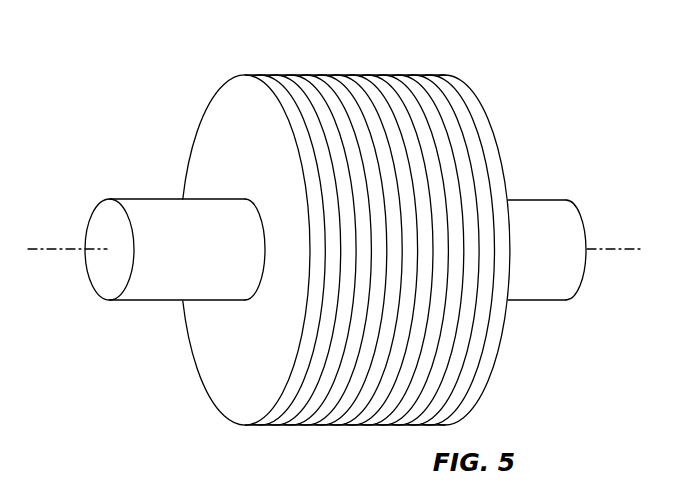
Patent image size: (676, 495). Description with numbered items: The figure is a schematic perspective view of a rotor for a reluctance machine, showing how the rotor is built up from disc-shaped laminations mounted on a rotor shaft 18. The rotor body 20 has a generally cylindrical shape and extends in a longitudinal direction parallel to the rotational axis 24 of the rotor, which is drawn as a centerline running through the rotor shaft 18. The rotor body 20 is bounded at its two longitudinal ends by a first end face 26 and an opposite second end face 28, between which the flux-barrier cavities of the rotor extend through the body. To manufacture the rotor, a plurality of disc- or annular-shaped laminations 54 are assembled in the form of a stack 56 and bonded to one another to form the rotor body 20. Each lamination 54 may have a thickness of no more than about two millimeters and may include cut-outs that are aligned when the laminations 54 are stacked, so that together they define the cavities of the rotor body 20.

The rotor shaft 18 is at (145, 300).
The rotor body 20 is at (341, 250).
The rotational axis 24 is at (55, 248).
The first end face 26 is at (198, 163).
The second end face 28 is at (485, 388).
The laminations 54 is at (303, 75).
The stack 56 is at (206, 110).